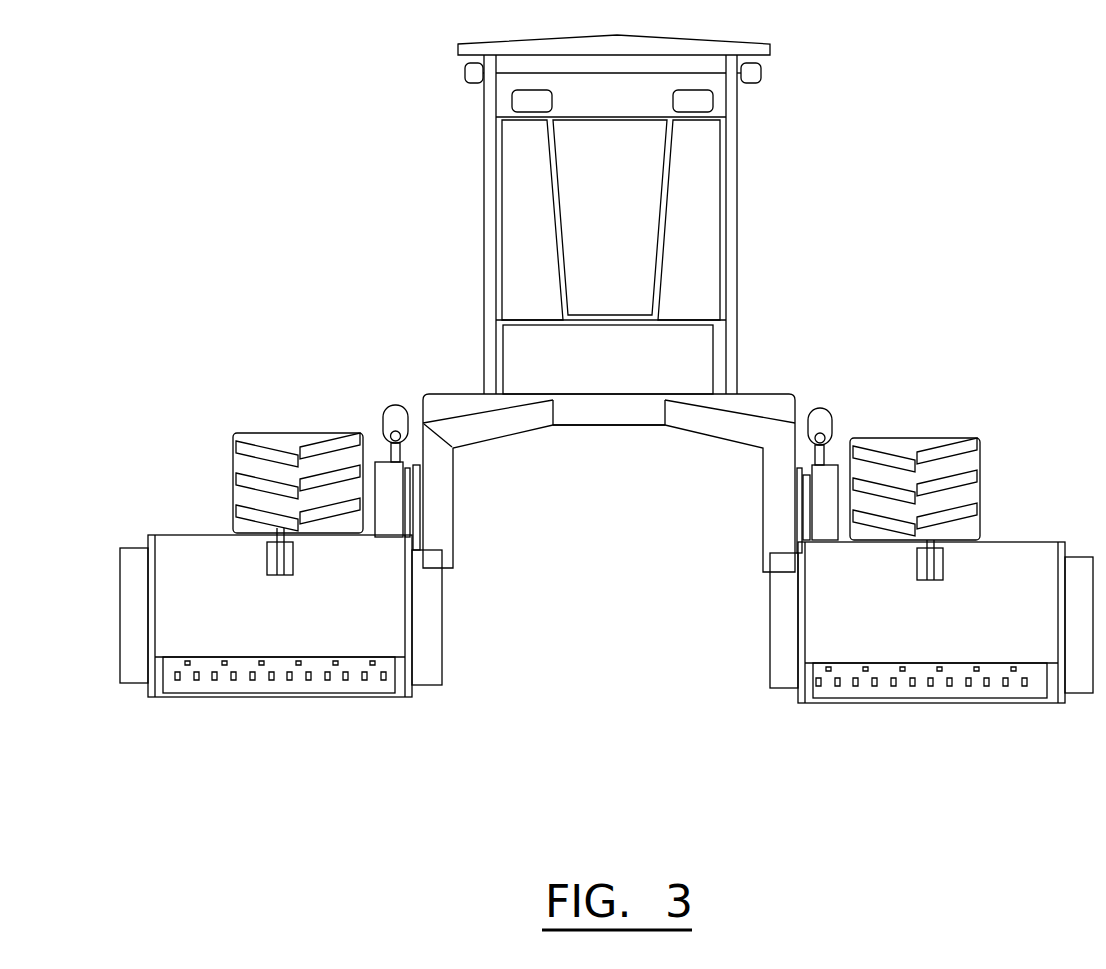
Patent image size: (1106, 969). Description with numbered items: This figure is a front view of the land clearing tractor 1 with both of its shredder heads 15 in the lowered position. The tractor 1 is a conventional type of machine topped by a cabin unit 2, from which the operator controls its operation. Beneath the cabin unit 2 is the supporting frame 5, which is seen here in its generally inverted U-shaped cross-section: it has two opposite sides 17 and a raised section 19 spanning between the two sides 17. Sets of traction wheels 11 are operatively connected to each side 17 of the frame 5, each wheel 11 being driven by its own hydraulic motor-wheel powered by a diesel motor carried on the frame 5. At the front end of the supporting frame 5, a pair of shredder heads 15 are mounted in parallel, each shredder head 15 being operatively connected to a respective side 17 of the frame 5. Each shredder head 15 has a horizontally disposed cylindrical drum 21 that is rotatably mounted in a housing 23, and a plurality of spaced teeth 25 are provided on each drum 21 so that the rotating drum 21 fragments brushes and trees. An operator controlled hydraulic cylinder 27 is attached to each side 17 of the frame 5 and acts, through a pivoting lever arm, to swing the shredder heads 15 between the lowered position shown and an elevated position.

The land clearing tractor 1 is at (316, 139).
The cabin unit 2 is at (738, 185).
The supporting frame 5 is at (714, 452).
The traction wheels 11 is at (272, 437).
The shredder heads 15 is at (198, 550).
The opposite sides 17 is at (424, 393).
The raised section 19 is at (612, 430).
The cylindrical drum 21 is at (388, 688).
The housing 23 is at (777, 648).
The teeth 25 is at (305, 680).
The hydraulic cylinder 27 is at (390, 407).